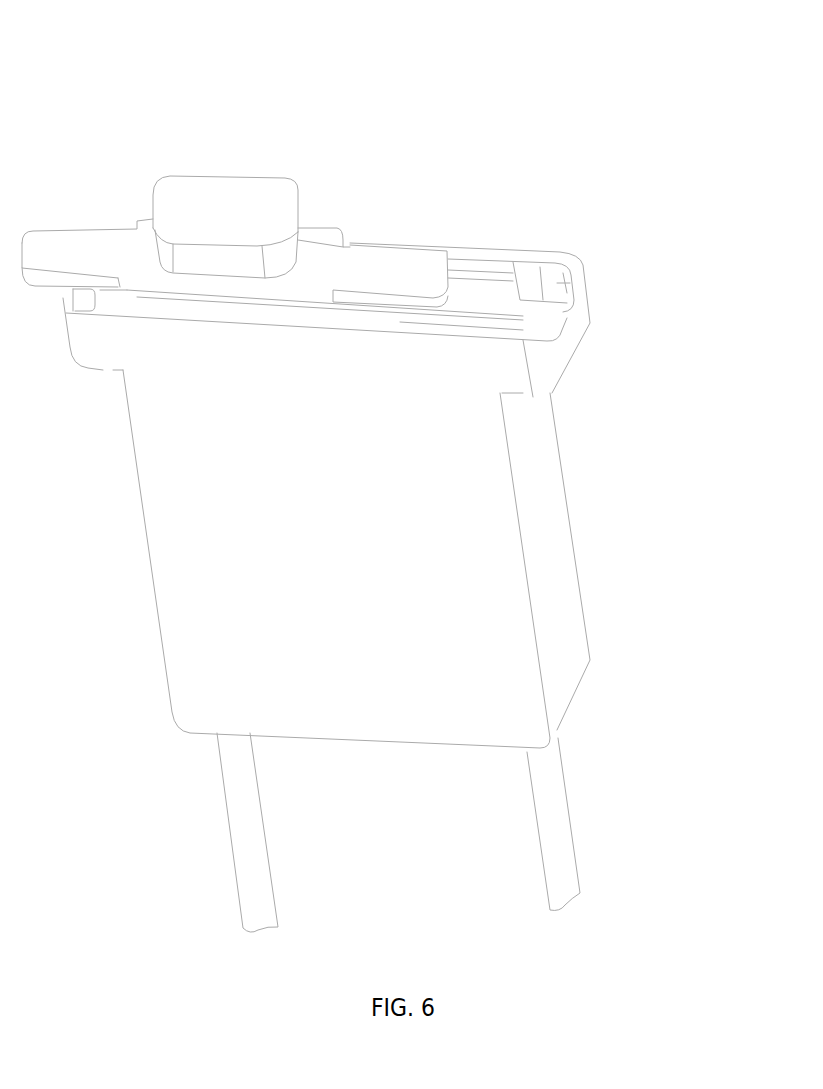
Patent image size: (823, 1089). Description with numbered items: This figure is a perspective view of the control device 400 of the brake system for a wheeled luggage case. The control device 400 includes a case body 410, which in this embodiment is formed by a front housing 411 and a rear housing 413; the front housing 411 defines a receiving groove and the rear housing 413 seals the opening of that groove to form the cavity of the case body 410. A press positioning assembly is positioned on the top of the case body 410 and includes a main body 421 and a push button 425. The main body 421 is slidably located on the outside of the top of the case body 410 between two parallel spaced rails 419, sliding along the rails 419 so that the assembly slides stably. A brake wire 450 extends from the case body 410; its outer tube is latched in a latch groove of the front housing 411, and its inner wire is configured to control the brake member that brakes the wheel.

The control device 400 is at (227, 73).
The case body 410 is at (709, 357).
The front housing 411 is at (550, 345).
The rear housing 413 is at (477, 580).
The rails 419 is at (520, 268).
The main body 421 is at (413, 270).
The push button 425 is at (258, 210).
The brake wire 450 is at (552, 828).